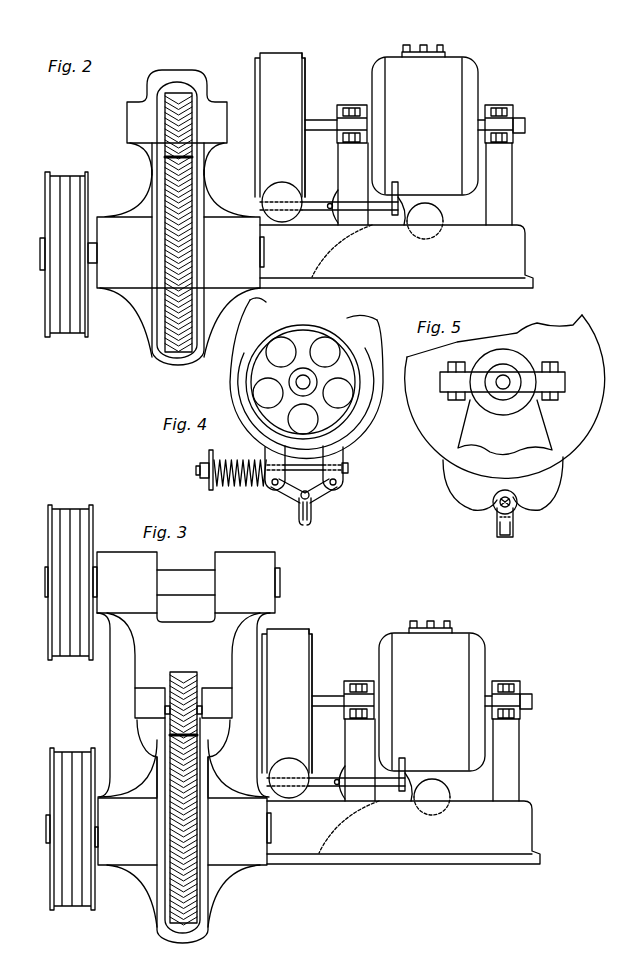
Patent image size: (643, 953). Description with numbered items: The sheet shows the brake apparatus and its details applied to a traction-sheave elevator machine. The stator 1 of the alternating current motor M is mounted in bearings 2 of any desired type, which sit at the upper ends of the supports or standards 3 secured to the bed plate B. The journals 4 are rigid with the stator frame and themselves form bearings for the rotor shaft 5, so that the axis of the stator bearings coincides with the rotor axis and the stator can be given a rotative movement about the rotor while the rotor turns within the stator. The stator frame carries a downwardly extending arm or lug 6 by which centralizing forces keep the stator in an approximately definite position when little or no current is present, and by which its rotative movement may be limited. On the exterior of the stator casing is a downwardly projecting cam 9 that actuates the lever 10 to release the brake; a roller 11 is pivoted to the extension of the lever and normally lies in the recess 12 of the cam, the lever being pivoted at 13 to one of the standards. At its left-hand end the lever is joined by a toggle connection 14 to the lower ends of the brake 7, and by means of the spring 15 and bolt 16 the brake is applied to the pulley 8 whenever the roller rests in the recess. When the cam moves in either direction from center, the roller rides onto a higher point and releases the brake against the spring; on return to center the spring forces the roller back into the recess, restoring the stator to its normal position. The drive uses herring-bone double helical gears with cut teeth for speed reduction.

In FIG. 2, the stator 1 is at (468, 73).
In FIG. 5, the stator 1 is at (593, 377).
In FIG. 3, the stator 1 is at (445, 697).
In FIG. 2, the bearings 2 is at (342, 105).
In FIG. 3, the bearings 2 is at (438, 686).
In FIG. 2, the supports or standards 3 is at (347, 162).
In FIG. 3, the supports or standards 3 is at (433, 760).
In FIG. 2, the journals 4 is at (337, 117).
In FIG. 3, the journals 4 is at (433, 687).
In FIG. 2, the rotor shaft 5 is at (525, 128).
In FIG. 3, the rotor shaft 5 is at (542, 704).
In FIG. 2, the arm or lug 6 is at (438, 203).
In FIG. 3, the arm or lug 6 is at (445, 796).
In FIG. 2, the brake 7 is at (281, 66).
In FIG. 4, the brake 7 is at (363, 343).
In FIG. 3, the brake 7 is at (287, 702).
In FIG. 2, the pulley 8 is at (305, 67).
In FIG. 4, the pulley 8 is at (307, 337).
In FIG. 3, the pulley 8 is at (322, 698).
In FIG. 2, the cam 9 is at (394, 215).
In FIG. 5, the cam 9 is at (550, 493).
In FIG. 3, the cam 9 is at (403, 800).
In FIG. 2, the lever 10 is at (345, 203).
In FIG. 4, the lever 10 is at (309, 528).
In FIG. 5, the lever 10 is at (508, 537).
In FIG. 3, the lever 10 is at (336, 769).
In FIG. 5, the roller 11 is at (513, 510).
In FIG. 5, the recess 12 is at (507, 496).
In FIG. 5, the pivot 13 is at (498, 517).
In FIG. 4, the toggle connection 14 is at (311, 499).
In FIG. 4, the spring 15 is at (238, 448).
In FIG. 4, the bolt 16 is at (299, 472).
In FIG. 2, the bed plate B is at (515, 245).
In FIG. 2, the alternating current motor M is at (402, 46).
In FIG. 3, the alternating current motor M is at (409, 622).